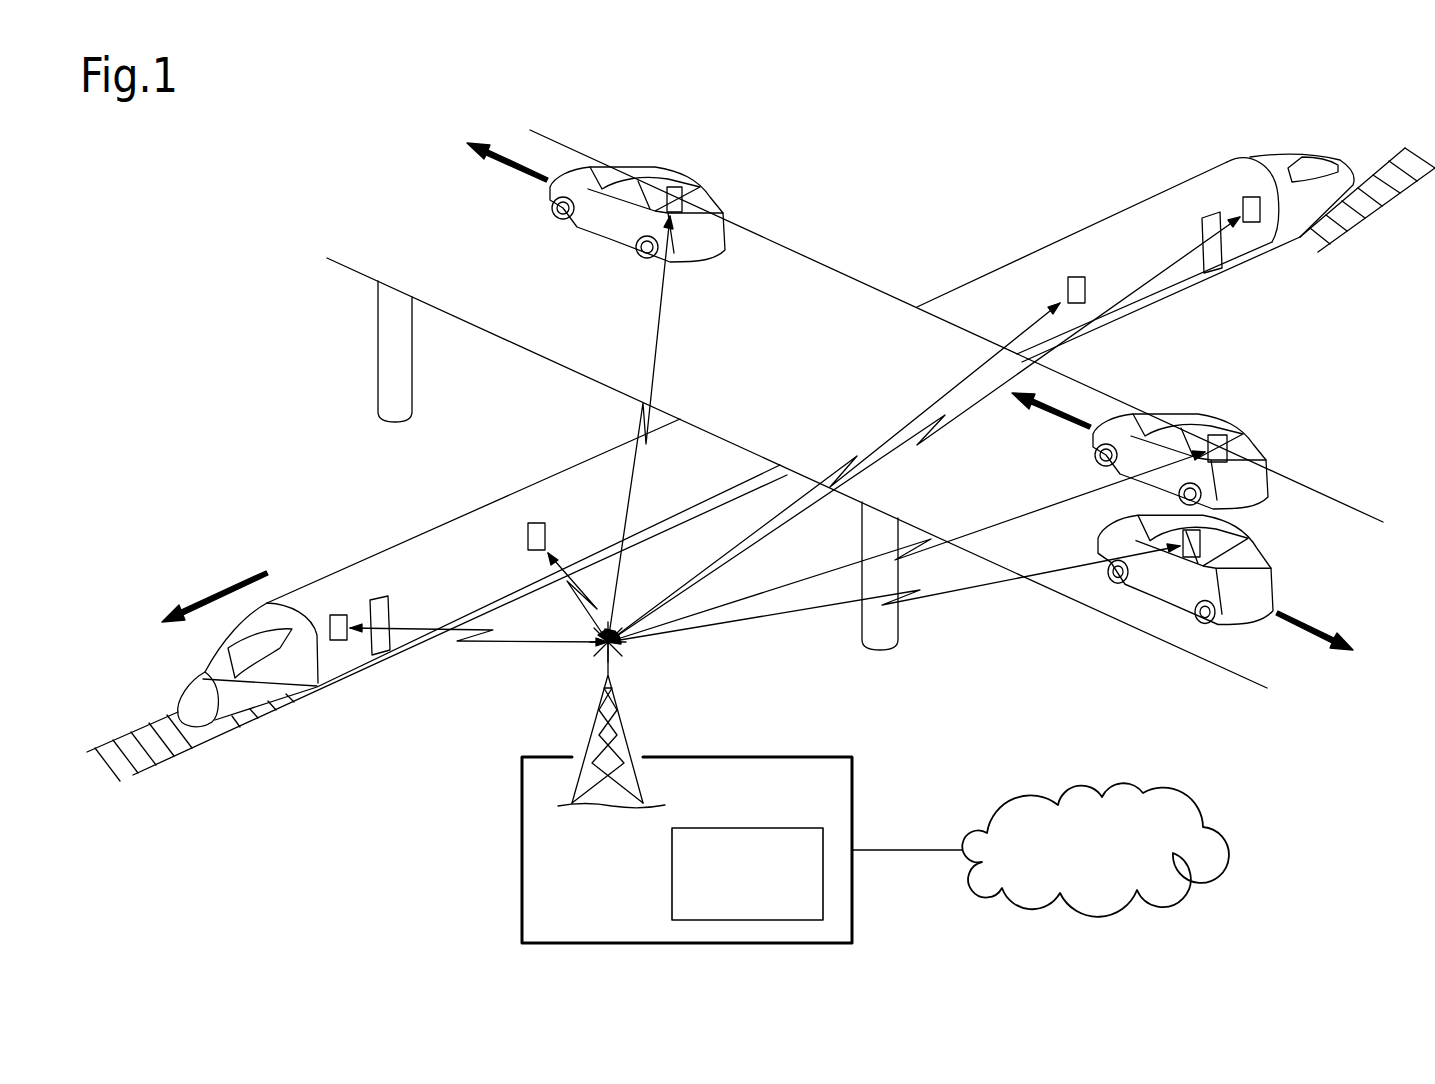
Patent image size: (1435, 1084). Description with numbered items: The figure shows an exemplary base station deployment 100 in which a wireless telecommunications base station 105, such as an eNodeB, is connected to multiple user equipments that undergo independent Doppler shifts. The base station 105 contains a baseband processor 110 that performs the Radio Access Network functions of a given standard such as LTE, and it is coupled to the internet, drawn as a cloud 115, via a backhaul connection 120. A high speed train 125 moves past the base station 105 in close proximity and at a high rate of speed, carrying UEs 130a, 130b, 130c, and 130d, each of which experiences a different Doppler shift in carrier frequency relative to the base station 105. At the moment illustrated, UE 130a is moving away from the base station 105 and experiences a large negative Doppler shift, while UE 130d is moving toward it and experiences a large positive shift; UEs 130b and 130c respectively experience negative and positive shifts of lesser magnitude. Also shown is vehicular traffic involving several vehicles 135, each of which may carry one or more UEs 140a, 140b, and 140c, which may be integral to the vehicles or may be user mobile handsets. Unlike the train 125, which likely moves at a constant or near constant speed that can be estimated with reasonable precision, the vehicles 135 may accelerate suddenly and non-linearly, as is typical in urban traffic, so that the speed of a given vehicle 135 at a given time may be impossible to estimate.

The base station deployment 100 is at (184, 194).
The wireless telecommunications base station 105 is at (623, 892).
The baseband processor 110 is at (772, 892).
The network (cloud) 115 is at (1118, 862).
The backhaul connection 120 is at (883, 848).
The high speed train 125 is at (390, 577).
The UE 130a is at (346, 642).
The UE 130b is at (540, 523).
The UE 130c is at (1077, 277).
The UE 130d is at (1258, 213).
The vehicles 135 is at (597, 170).
The UE 140a is at (1227, 452).
The UE 140b is at (1202, 545).
The UE 140c is at (682, 198).